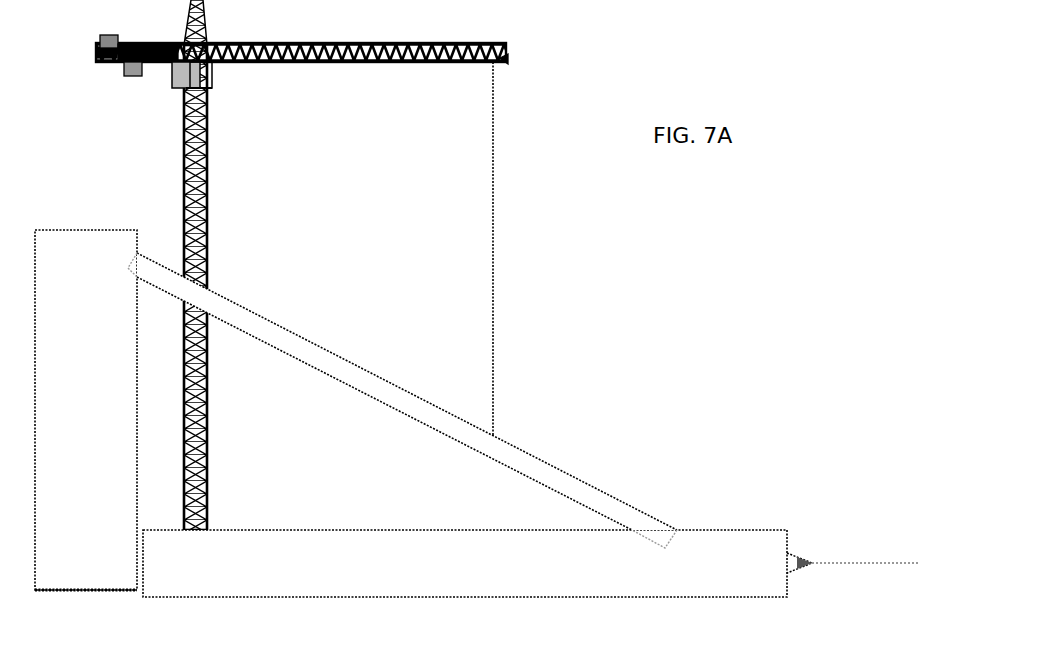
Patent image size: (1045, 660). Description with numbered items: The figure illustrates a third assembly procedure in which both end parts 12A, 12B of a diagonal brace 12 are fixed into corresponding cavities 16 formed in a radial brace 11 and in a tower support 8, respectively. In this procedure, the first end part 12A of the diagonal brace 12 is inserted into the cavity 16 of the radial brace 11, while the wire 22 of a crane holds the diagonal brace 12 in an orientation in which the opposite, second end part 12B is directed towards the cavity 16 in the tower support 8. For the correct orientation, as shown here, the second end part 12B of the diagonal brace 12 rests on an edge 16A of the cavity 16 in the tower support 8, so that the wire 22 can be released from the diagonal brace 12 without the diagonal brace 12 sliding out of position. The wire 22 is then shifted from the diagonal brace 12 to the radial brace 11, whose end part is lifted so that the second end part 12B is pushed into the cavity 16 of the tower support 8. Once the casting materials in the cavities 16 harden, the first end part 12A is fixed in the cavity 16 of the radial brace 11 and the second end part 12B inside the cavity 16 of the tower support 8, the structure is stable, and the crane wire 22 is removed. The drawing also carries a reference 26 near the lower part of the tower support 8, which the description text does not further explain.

The tower support 8 is at (96, 417).
The radial brace 11 is at (755, 535).
The diagonal brace 12 is at (392, 385).
The first end part 12A is at (667, 495).
The second end part 12B is at (141, 298).
The cavity 16 is at (126, 259).
The edge of the cavity 16A is at (128, 281).
The wire 22 is at (493, 227).
The support region 26 is at (130, 552).